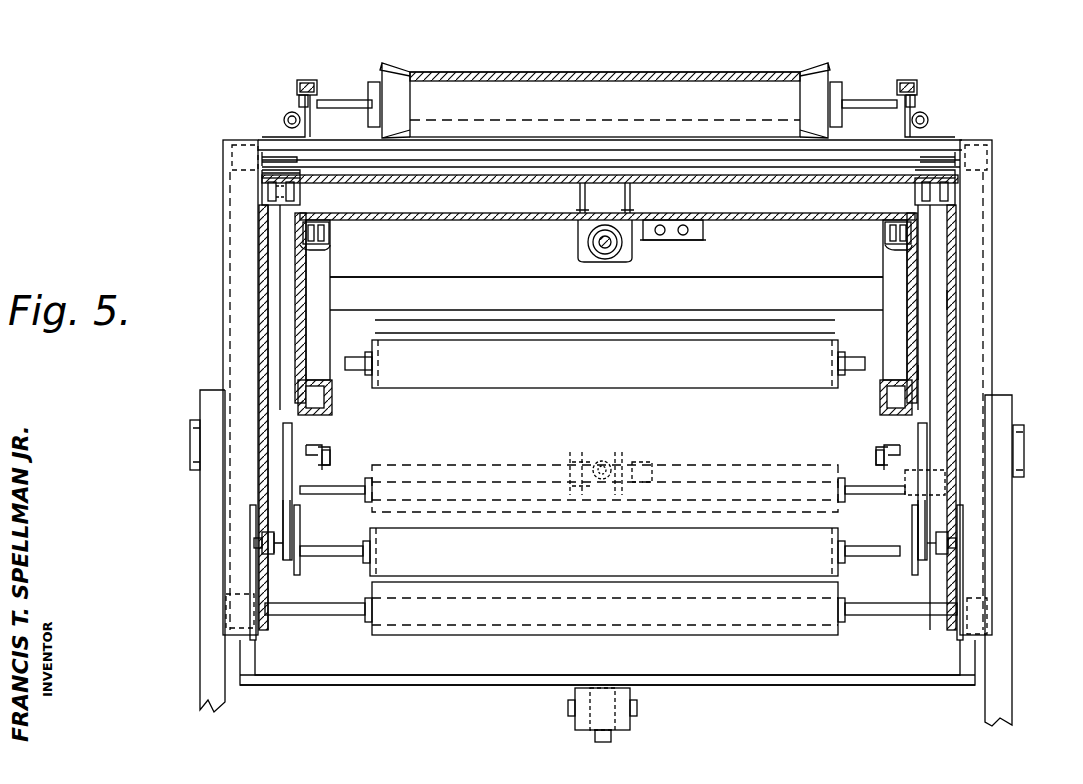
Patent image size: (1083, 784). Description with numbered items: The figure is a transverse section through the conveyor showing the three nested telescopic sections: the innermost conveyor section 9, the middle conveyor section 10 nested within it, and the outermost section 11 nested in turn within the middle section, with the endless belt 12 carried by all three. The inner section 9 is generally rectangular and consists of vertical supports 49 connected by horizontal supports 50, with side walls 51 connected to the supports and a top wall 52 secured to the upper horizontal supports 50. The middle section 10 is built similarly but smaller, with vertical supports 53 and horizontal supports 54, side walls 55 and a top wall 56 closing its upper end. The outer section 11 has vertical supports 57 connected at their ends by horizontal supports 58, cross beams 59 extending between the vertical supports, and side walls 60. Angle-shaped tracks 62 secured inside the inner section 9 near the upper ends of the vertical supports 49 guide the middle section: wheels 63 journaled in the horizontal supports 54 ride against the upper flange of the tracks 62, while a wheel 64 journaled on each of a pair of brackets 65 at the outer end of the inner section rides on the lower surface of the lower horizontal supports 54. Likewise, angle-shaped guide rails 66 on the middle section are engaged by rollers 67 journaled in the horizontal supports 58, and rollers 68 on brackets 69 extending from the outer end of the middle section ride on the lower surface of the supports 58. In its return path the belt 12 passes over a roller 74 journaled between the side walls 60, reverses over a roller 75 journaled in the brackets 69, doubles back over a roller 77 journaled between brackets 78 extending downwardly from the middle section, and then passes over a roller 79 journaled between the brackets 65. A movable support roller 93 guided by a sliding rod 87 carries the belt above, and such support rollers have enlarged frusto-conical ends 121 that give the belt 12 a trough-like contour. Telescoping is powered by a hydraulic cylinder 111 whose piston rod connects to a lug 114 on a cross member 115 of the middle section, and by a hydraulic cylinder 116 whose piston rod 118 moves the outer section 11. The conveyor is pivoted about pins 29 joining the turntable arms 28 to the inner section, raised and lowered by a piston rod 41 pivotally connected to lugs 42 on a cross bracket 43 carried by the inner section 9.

The inner conveyor section 9 is at (996, 197).
The middle conveyor section 10 is at (956, 298).
The outer conveyor section 11 is at (922, 372).
The endless belt 12 is at (606, 74).
The arms 28 is at (202, 516).
The pins 29 is at (192, 450).
The piston rod 41 is at (611, 738).
The lugs 42 is at (578, 723).
The cross bracket 43 is at (700, 685).
The vertical supports 49 is at (238, 237).
The horizontal supports 50 is at (240, 152).
The side walls 51 is at (226, 297).
The top wall 52 is at (872, 157).
The vertical supports 53 is at (282, 273).
The horizontal supports 54 is at (290, 188).
The side walls 55 is at (268, 318).
The top wall 56 is at (487, 180).
The vertical supports 57 is at (320, 331).
The horizontal supports 58 is at (327, 241).
The cross beams 59 is at (748, 284).
The side walls 60 is at (306, 370).
The angle-shaped tracks 62 is at (264, 160).
The wheels 63 is at (270, 186).
The wheel 64 is at (280, 562).
The brackets 65 is at (252, 568).
The angle-shaped guide rails 66 is at (335, 215).
The rollers 67 is at (322, 232).
The rollers 68 is at (325, 457).
The brackets 69 is at (292, 474).
The roller 74 is at (676, 380).
The roller 75 is at (782, 462).
The roller 77 is at (836, 540).
The brackets 78 is at (300, 572).
The roller 79 is at (838, 622).
The rod 87 is at (308, 78).
The movable roller 93 is at (745, 86).
The hydraulic cylinder 111 is at (610, 455).
The lug 114 is at (586, 452).
The cross member 115 is at (912, 500).
The hydraulic cylinder 116 is at (590, 258).
The piston rod 118 is at (615, 260).
The frusto-conical ends 121 is at (398, 70).